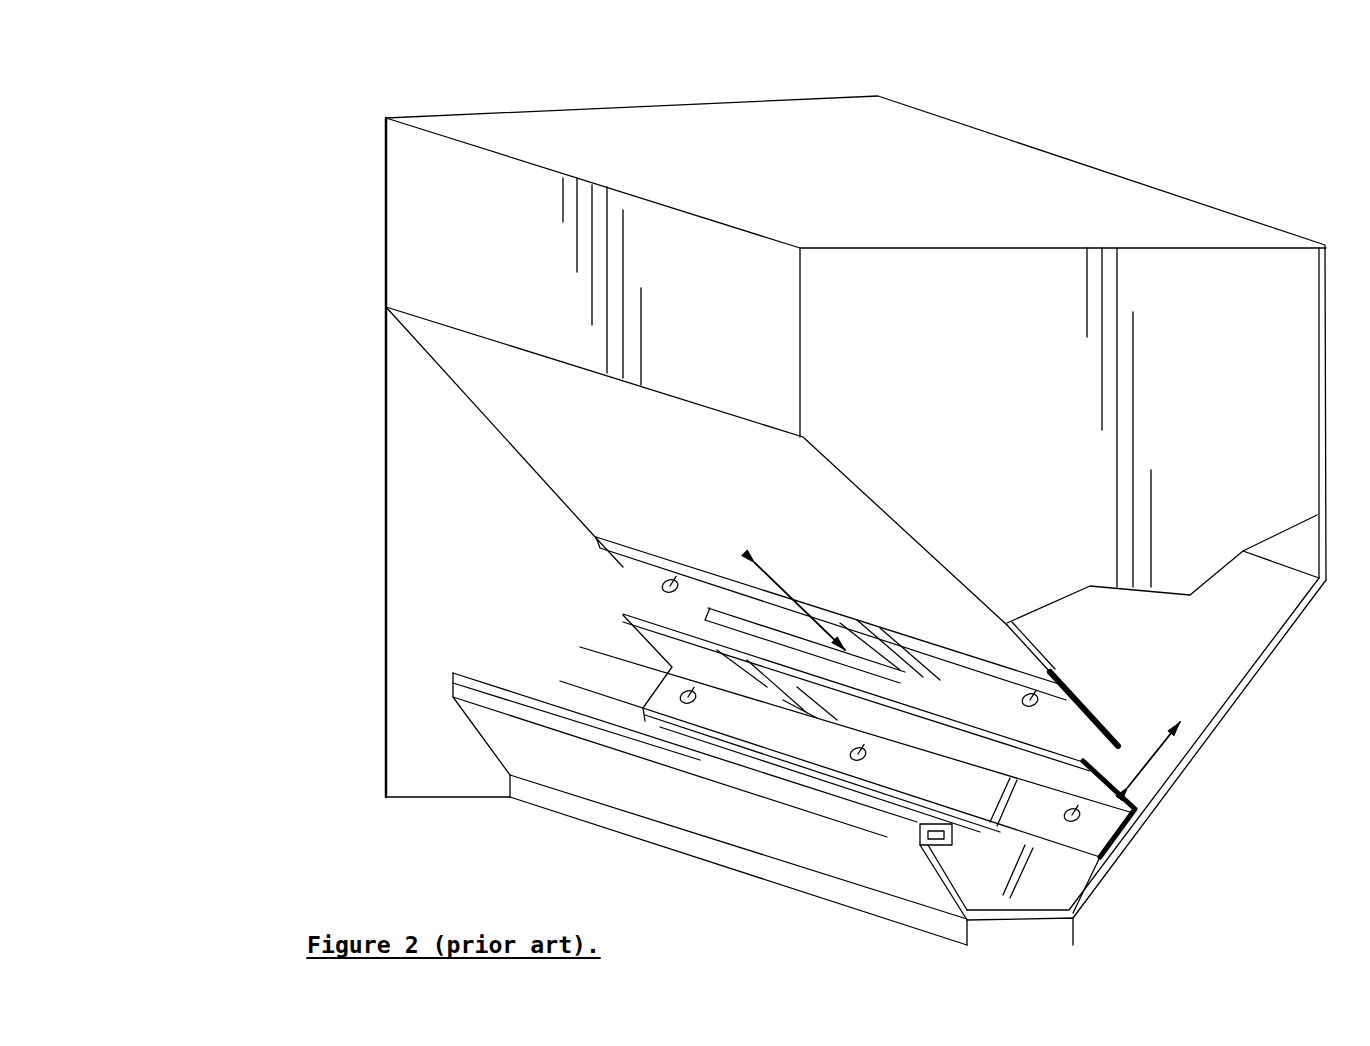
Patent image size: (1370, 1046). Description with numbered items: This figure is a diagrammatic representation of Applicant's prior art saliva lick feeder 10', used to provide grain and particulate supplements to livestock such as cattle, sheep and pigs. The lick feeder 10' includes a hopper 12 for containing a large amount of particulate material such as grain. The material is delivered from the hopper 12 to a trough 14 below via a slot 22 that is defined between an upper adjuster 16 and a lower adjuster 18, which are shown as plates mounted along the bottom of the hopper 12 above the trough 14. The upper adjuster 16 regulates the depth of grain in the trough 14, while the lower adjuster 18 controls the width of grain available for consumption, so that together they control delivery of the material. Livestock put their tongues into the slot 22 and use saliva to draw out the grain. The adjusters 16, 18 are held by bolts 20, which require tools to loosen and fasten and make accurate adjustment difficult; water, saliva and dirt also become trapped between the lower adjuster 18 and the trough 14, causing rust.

The lick feeder 10' is at (752, 494).
The hopper 12 is at (990, 168).
The trough 14 is at (572, 678).
The upper adjuster 16 is at (1105, 724).
The lower adjuster 18 is at (1128, 800).
The bolts 20 is at (1072, 815).
The slot 22 is at (720, 623).